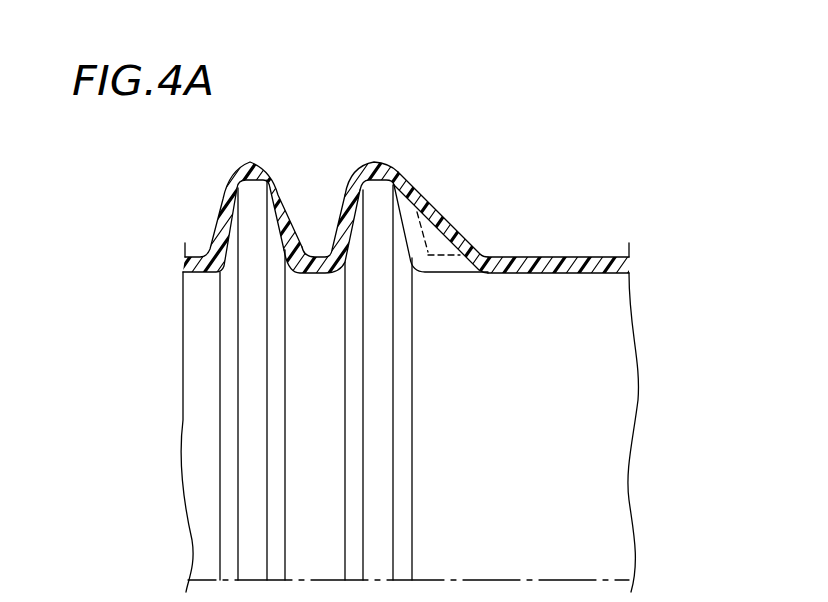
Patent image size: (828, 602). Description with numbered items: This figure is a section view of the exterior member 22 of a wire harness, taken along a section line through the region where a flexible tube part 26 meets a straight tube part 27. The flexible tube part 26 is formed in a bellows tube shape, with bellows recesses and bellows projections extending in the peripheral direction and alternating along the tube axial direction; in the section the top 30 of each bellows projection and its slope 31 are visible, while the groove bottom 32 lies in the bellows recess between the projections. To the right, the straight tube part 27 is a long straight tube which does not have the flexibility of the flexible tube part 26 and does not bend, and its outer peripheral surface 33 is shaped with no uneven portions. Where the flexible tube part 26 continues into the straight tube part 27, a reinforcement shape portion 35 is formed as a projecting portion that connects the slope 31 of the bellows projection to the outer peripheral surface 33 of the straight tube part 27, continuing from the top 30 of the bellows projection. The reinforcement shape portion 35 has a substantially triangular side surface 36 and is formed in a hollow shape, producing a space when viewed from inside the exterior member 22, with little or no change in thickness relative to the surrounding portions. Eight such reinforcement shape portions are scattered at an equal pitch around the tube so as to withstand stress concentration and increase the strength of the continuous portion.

The exterior member 22 is at (610, 160).
The flexible tube part 26 is at (218, 222).
The straight tube part 27 is at (612, 257).
The top 30 is at (377, 160).
The slope 31 is at (442, 252).
The groove bottom 32 is at (315, 252).
The outer peripheral surface 33 is at (563, 255).
The reinforcement shape portion 35 is at (445, 213).
The substantially triangular side surface 36 is at (443, 268).